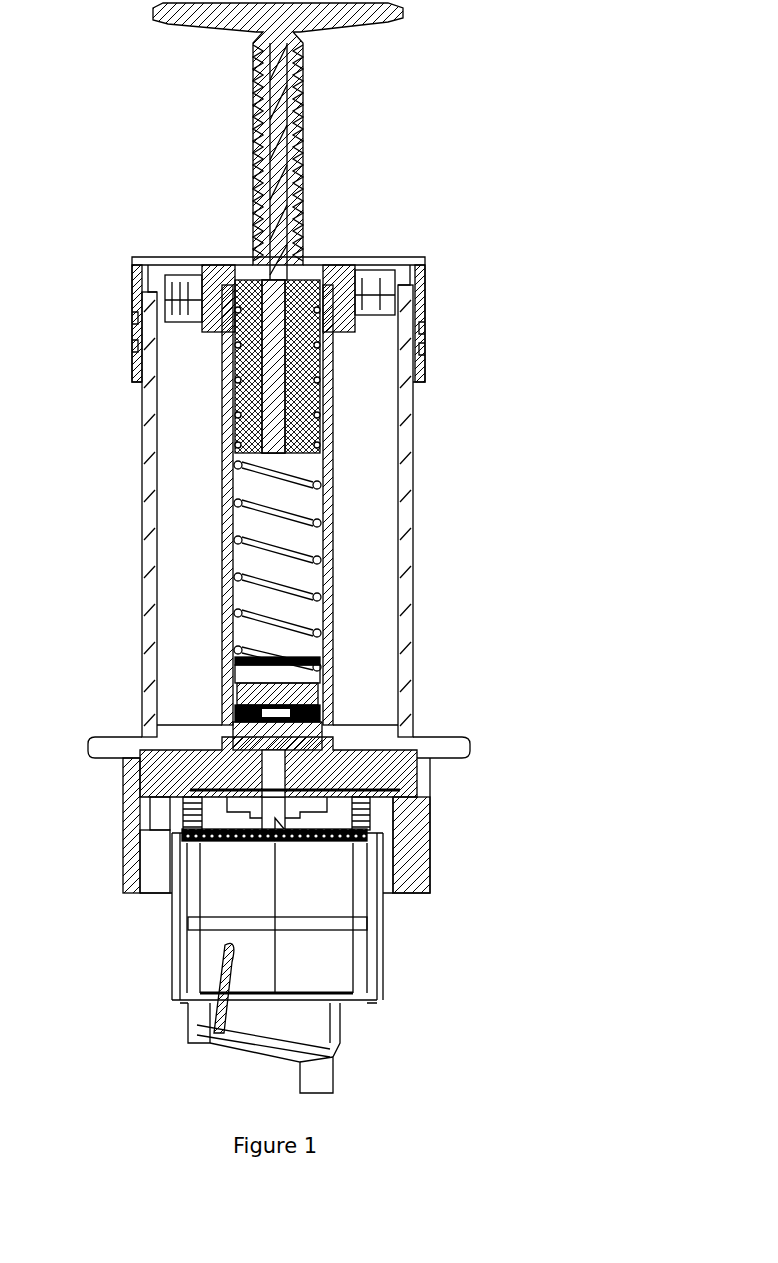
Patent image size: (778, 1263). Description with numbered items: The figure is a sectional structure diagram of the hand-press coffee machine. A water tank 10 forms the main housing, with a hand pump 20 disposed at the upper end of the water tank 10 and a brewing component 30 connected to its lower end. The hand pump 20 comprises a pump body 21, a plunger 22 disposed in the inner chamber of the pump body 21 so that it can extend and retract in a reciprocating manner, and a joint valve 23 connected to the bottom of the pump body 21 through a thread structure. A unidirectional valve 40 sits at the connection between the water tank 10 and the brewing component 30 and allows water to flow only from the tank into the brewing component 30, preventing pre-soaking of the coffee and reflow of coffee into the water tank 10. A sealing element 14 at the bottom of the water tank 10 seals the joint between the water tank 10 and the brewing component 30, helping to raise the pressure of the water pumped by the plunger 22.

The water tank 10 is at (190, 458).
The sealing element 14 is at (160, 790).
The hand pump 20 is at (310, 433).
The pump body 21 is at (327, 552).
The plunger 22 is at (236, 410).
The joint valve 23 is at (232, 692).
The brewing component 30 is at (318, 865).
The unidirectional valve 40 is at (313, 777).